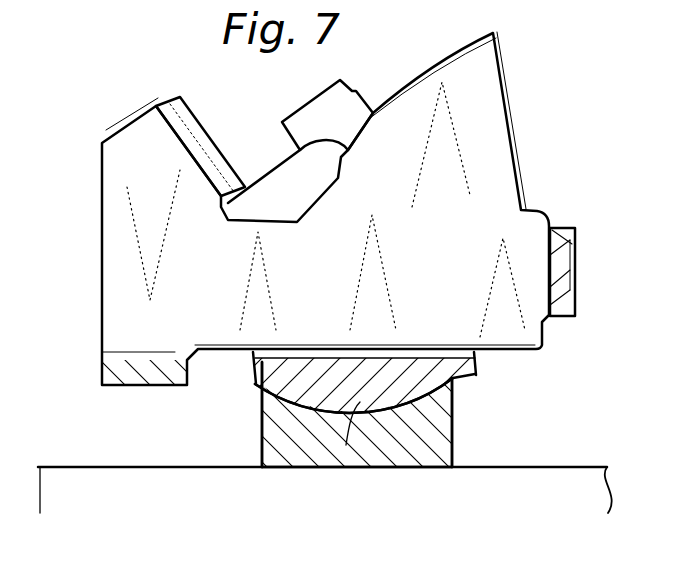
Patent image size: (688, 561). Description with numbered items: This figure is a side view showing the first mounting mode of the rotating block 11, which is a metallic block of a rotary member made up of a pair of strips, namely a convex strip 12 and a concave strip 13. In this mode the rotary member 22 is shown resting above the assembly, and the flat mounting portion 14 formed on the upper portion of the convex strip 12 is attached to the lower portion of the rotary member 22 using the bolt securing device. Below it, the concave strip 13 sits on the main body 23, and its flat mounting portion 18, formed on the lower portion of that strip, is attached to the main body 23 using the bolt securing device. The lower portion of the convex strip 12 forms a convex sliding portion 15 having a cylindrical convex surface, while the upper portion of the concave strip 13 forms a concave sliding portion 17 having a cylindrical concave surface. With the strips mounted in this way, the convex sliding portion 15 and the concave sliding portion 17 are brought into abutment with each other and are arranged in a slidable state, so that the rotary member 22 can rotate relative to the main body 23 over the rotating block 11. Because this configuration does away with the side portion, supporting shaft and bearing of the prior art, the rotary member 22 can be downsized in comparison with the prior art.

The rotating block 11 is at (262, 444).
The convex strip 12 is at (474, 370).
The concave strip 13 is at (433, 437).
The mounting portion 14 is at (372, 360).
The convex sliding portion 15 is at (330, 408).
The concave sliding portion 17 is at (346, 445).
The mounting portion 18 is at (380, 468).
The rotary member 22 is at (476, 138).
The main body 23 is at (238, 483).